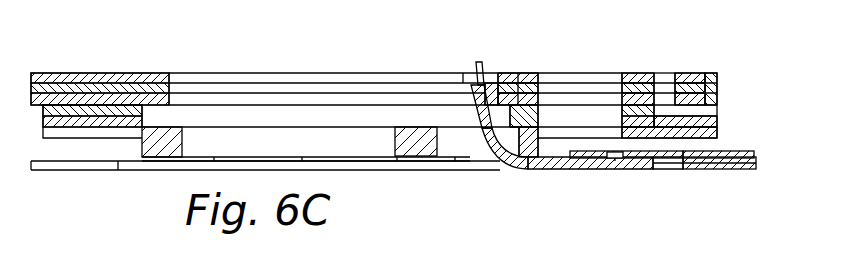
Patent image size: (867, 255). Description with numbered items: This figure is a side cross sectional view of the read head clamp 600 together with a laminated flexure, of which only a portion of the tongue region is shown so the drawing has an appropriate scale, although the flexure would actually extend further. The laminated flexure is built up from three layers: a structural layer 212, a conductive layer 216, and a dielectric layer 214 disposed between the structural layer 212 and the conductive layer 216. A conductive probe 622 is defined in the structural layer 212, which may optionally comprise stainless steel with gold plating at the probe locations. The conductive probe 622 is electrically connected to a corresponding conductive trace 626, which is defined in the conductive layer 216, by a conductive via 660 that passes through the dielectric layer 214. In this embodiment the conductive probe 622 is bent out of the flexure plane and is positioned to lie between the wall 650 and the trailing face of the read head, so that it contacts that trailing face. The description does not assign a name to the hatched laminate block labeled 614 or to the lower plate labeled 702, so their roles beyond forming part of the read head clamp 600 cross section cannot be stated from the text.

The upper laminate layer 614 is at (95, 88).
The read head clamp 600 is at (277, 77).
The dielectric layer 214 is at (476, 63).
The wall 650 is at (502, 88).
The base plate 702 is at (91, 166).
The conductive probe 622 is at (480, 145).
The conductive trace 626 is at (590, 150).
The conductive via 660 is at (615, 158).
The structural layer 212 is at (732, 168).
The conductive layer 216 is at (742, 153).